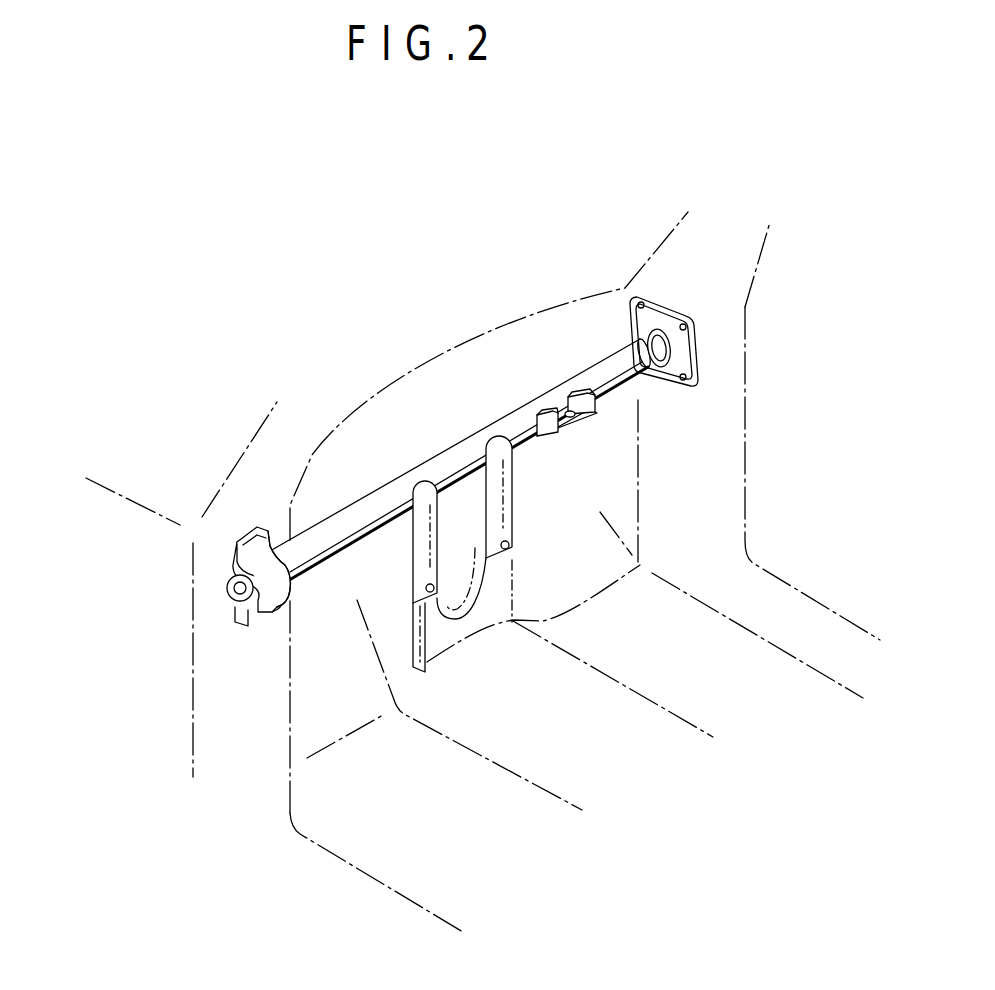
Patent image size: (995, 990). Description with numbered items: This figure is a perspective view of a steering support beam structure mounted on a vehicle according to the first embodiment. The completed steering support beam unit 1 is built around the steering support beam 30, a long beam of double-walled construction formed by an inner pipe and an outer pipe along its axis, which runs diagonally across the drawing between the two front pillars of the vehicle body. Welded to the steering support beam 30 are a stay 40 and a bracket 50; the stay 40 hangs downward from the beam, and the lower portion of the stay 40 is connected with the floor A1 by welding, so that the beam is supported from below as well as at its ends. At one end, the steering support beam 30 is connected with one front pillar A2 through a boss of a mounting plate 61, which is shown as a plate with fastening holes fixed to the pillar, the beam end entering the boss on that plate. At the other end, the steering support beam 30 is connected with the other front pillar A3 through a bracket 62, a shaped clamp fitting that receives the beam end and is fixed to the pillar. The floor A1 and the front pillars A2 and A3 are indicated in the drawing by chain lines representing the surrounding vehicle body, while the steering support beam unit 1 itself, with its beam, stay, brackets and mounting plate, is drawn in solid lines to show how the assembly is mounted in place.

The steering support beam unit 1 is at (430, 440).
The steering support beam 30 is at (541, 398).
The stay 40 is at (428, 562).
The bracket 50 is at (570, 428).
The mounting plate 61 is at (680, 353).
The bracket 62 is at (238, 542).
The floor A1 is at (515, 652).
The front pillar A2 is at (713, 433).
The front pillar A3 is at (237, 668).